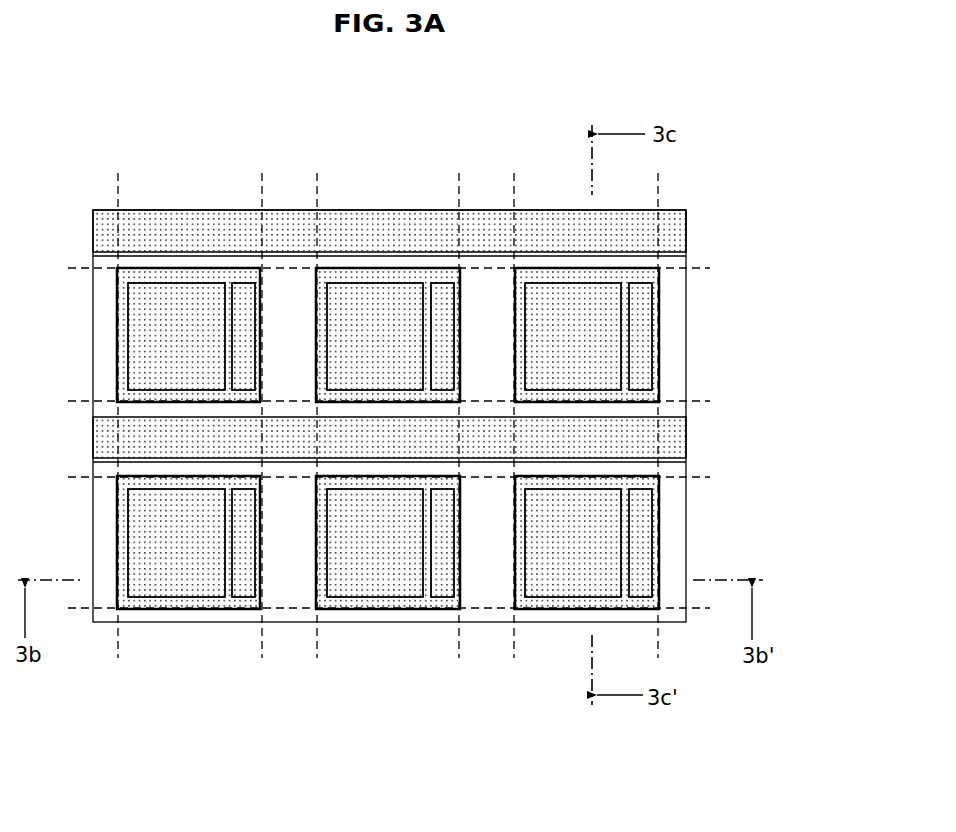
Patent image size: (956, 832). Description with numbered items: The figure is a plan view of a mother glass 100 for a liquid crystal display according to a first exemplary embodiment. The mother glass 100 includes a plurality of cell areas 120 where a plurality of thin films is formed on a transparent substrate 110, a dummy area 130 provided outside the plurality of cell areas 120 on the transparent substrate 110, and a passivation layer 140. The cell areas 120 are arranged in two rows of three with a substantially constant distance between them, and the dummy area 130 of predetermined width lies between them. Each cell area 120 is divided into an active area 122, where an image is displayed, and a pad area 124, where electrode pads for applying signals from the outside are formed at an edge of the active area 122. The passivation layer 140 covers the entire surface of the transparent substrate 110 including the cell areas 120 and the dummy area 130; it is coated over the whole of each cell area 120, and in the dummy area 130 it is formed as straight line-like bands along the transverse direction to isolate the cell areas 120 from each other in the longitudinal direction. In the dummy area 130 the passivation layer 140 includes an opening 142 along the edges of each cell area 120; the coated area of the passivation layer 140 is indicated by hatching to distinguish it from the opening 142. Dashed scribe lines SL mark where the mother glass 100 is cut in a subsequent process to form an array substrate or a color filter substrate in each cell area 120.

The mother glass 100 is at (395, 102).
The transparent substrate 110 is at (93, 290).
The cell area 120 is at (123, 350).
The active area 122 is at (157, 295).
The pad area 124 is at (245, 293).
The dummy area 130 is at (107, 513).
The passivation layer 140 is at (677, 234).
The opening 142 is at (675, 332).
The scribe line SL is at (118, 180).